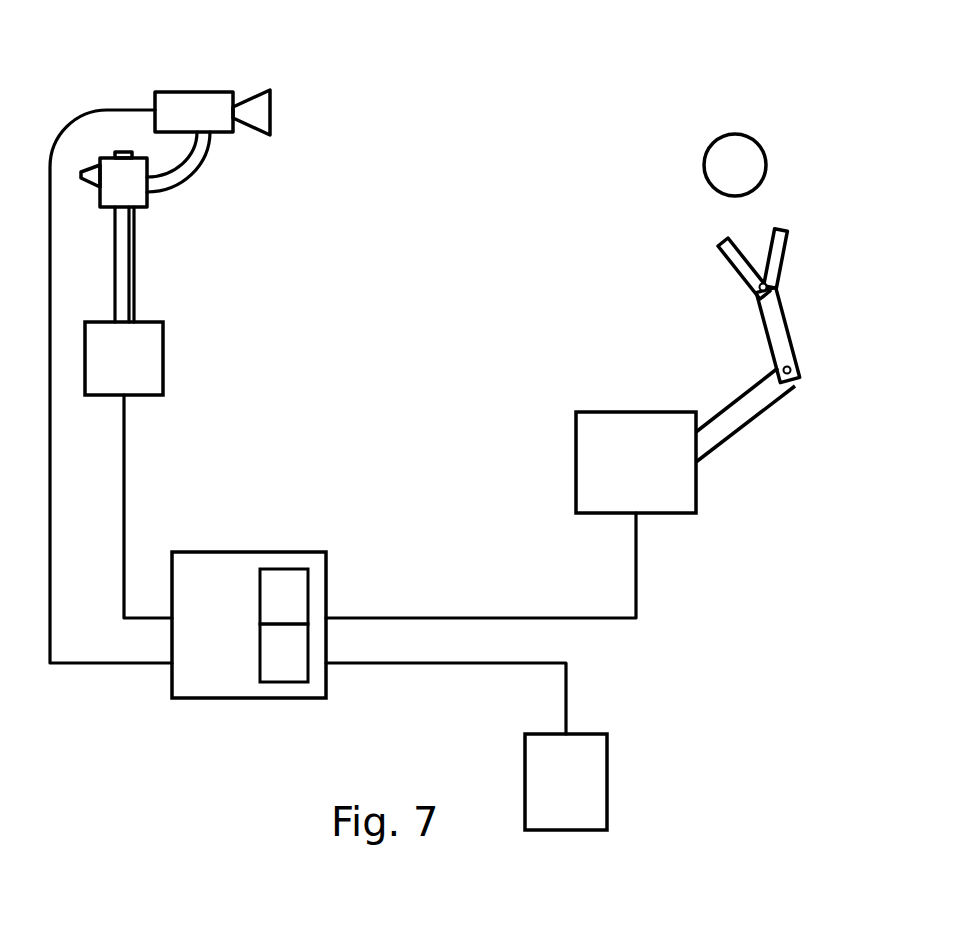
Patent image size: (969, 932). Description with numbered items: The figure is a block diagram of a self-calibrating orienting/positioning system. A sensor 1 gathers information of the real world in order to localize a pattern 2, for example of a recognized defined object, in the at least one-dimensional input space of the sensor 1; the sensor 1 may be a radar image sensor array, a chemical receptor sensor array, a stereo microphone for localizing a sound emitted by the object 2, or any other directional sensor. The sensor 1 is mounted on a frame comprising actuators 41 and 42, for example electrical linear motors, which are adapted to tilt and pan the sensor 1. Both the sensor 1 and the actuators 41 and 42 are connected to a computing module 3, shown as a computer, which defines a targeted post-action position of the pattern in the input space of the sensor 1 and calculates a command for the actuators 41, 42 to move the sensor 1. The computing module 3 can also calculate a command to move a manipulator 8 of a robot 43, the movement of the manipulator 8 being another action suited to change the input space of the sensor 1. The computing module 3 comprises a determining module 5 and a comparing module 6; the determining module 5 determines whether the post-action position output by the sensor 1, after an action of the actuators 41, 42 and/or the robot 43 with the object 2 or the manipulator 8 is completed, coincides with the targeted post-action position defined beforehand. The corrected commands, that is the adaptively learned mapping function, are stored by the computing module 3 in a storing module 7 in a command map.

The sensor 1 is at (200, 92).
The pattern 2 is at (767, 165).
The computing module 3 is at (232, 698).
The determining module 5 is at (308, 588).
The comparing module 6 is at (308, 673).
The storing module 7 is at (607, 782).
The manipulator 8 is at (777, 253).
The actuator 41 is at (163, 360).
The actuator 42 is at (147, 205).
The robot 43 is at (576, 472).